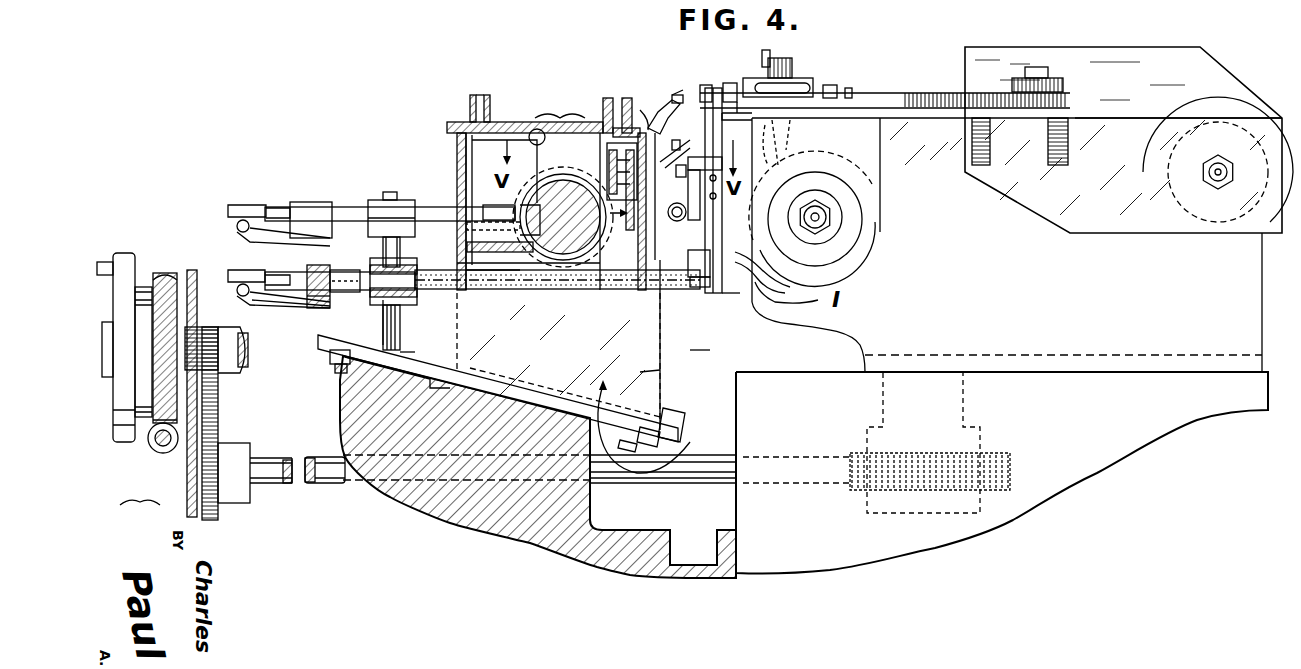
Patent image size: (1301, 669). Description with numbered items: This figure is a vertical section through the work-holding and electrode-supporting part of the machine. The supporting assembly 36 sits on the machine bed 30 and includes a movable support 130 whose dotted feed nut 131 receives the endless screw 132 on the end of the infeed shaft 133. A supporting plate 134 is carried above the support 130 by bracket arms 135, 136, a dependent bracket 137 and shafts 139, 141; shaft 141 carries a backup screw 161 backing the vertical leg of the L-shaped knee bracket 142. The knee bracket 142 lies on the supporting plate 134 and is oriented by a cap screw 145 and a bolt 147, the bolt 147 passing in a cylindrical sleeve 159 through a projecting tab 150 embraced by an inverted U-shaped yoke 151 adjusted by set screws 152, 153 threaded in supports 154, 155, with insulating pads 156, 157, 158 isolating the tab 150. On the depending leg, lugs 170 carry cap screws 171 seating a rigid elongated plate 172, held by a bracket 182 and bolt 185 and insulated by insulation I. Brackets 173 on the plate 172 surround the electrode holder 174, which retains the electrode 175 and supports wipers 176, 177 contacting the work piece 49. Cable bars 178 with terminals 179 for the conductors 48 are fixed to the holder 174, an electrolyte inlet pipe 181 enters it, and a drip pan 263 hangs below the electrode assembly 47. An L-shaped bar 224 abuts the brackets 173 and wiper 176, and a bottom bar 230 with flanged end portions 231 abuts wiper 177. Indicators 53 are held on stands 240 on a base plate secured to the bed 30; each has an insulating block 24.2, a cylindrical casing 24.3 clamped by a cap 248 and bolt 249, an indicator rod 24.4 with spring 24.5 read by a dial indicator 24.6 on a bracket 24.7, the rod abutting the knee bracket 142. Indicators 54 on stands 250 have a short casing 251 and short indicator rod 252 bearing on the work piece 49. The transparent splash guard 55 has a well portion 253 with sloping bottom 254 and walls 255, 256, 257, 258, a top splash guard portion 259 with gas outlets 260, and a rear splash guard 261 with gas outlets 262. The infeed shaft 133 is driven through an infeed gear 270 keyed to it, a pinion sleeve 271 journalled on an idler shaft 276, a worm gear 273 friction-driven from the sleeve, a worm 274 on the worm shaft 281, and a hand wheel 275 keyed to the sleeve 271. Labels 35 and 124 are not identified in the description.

The machine bed 30 is at (597, 552).
The drive unit 35 is at (140, 516).
The supporting assembly 36 is at (1035, 313).
The electrode assembly 47 is at (676, 260).
The conductors 48 is at (678, 125).
The work piece 49 is at (563, 187).
The indicators 53 is at (247, 281).
The indicators 54 is at (247, 205).
The splash guard 55 is at (560, 102).
The pin 124 is at (680, 103).
The movable support 130 is at (1205, 313).
The feed nut 131 is at (985, 432).
The endless screw 132 is at (855, 490).
The infeed shaft 133 is at (275, 478).
The supporting plate 134 is at (938, 113).
The bracket arm 135 is at (1050, 210).
The bracket arm 136 is at (1130, 47).
The dependent bracket 137 is at (872, 165).
The shaft 139 is at (1215, 188).
The shaft 141 is at (830, 218).
The knee bracket 142 is at (898, 97).
The cap screw 145 is at (1040, 67).
The bolt 147 is at (785, 65).
The projecting tab 150 is at (800, 120).
The yoke 151 is at (802, 85).
The set screw 152 is at (852, 95).
The set screw 153 is at (705, 85).
The support 154 is at (848, 88).
The support 155 is at (732, 83).
The insulating pad 156 is at (792, 110).
The insulating pad 157 is at (763, 66).
The insulating pad 158 is at (770, 120).
The cylindrical sleeve 159 is at (812, 203).
The backup screw 161 is at (830, 295).
The lugs 170 is at (645, 160).
The cap screw 171 is at (738, 293).
The rigid elongated plate 172 is at (722, 185).
The brackets 173 is at (672, 205).
The electrode holder 174 is at (640, 240).
The electrode 175 is at (550, 222).
The wiper 176 is at (605, 98).
The wiper 177 is at (610, 242).
The cable bars 178 is at (624, 108).
The terminals 179 is at (652, 125).
The electrolyte inlet pipe 181 is at (700, 287).
The bracket 182 is at (806, 230).
The bolt 185 is at (676, 182).
The L-shaped elongated bar 224 is at (548, 240).
The bottom bar 230 is at (600, 322).
The flanged end portions 231 is at (612, 332).
The stands 240 is at (400, 328).
The insulating block 24.2 is at (386, 302).
The cylindrical casing 24.3 is at (343, 273).
The indicator rod 24.4 is at (722, 296).
The spring 24.5 is at (330, 298).
The dial indicator 24.6 is at (256, 275).
The bracket 24.7 is at (275, 293).
The cap 248 is at (417, 290).
The bolt 249 is at (396, 268).
The stands 250 is at (380, 248).
The short casing 251 is at (352, 207).
The short indicator rod 252 is at (514, 208).
The well portion 253 is at (524, 404).
The sloping bottom 254 is at (662, 408).
The wall 255 is at (462, 355).
The wall 256 is at (655, 375).
The wall 257 is at (705, 351).
The wall 258 is at (477, 250).
The top splash guard portion 259 is at (457, 140).
The gas outlets 260 is at (478, 110).
The rear splash guard 261 is at (530, 130).
The gas outlets 262 is at (648, 130).
The drip pan 263 is at (674, 138).
The infeed gear 270 is at (212, 408).
The pinion sleeve 271 is at (224, 305).
The worm gear 273 is at (165, 275).
The worm 274 is at (150, 447).
The hand wheel 275 is at (124, 260).
The idler shaft 276 is at (246, 357).
The worm shaft 281 is at (163, 452).